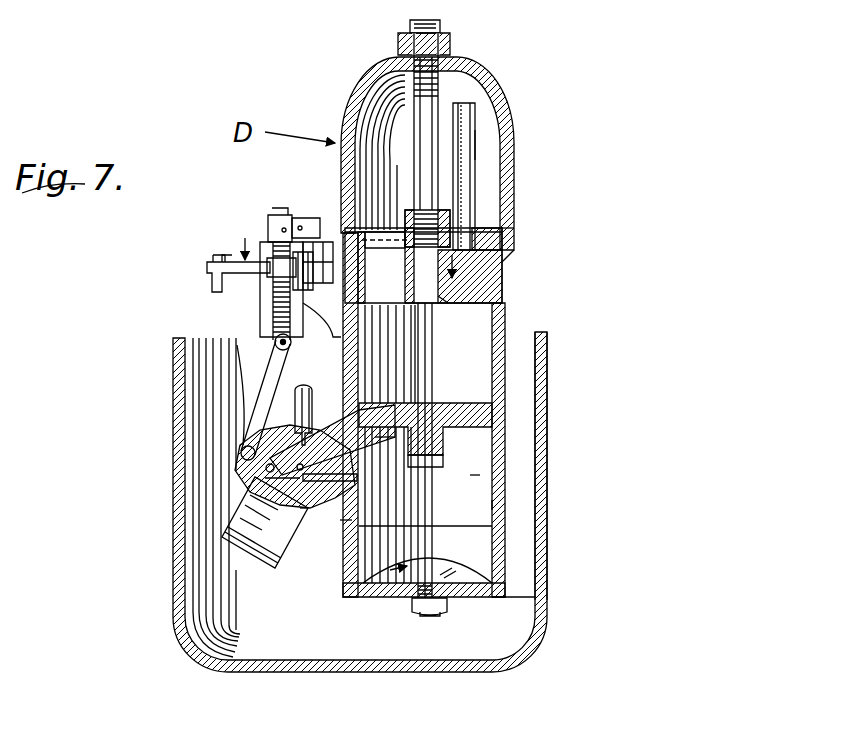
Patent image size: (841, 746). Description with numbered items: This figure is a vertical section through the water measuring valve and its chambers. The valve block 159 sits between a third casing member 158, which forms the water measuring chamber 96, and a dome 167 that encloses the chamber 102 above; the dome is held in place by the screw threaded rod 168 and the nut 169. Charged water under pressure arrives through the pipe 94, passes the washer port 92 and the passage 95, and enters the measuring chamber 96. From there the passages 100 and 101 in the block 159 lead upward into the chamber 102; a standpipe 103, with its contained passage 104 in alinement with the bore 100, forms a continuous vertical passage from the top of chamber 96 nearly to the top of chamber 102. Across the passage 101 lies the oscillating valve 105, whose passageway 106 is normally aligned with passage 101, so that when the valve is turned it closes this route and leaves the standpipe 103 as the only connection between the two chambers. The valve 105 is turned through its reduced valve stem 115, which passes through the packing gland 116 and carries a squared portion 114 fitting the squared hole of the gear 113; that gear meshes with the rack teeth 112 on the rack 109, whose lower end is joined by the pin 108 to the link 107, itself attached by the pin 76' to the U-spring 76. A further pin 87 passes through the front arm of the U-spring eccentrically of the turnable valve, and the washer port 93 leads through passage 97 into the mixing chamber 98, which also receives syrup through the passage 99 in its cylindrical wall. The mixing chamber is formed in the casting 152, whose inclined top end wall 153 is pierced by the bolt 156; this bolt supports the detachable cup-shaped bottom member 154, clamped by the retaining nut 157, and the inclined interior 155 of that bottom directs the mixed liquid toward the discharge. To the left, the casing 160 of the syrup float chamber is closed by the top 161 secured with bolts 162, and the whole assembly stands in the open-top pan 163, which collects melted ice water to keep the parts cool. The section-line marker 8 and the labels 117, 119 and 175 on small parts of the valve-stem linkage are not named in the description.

The section line 8- 8 is at (340, 256).
The U-spring 76 is at (265, 539).
The pin 76' is at (231, 450).
The pin 87 is at (280, 478).
The port 92 is at (262, 470).
The port 93 is at (258, 493).
The pipe 94 is at (314, 370).
The passage 95 is at (368, 437).
The water measuring chamber 96 is at (473, 353).
The passage 97 is at (303, 512).
The mixing chamber 98 is at (482, 470).
The passage 99 is at (345, 524).
The passage 100 is at (467, 272).
The passage 101 is at (388, 230).
The chamber 102 is at (488, 170).
The standpipe 103 is at (476, 134).
The passage 104 is at (467, 104).
The oscillating valve 105 is at (437, 300).
The passageway 106 is at (423, 305).
The link 107 is at (253, 426).
The pin 108 is at (276, 345).
The rack 109 is at (280, 210).
The rack teeth 112 is at (275, 295).
The gear 113 is at (273, 275).
The squared portion 114 is at (268, 270).
The valve stem 115 is at (405, 282).
The packing gland 116 is at (298, 285).
The block 117 is at (268, 222).
The block 119 is at (306, 218).
The casting 152 is at (505, 505).
The inclined top end wall 153 is at (503, 428).
The bottom closure member 154 is at (500, 604).
The interior 155 is at (403, 582).
The bolt 156 is at (435, 492).
The retaining nut 157 is at (440, 605).
The third member 158 is at (502, 312).
The valve block 159 is at (515, 246).
The casing 160 is at (243, 368).
The top 161 is at (223, 262).
The bolts 162 is at (212, 262).
The pan 163 is at (173, 537).
The dome 167 is at (348, 100).
The screw threaded rod 168 is at (412, 22).
The nut 169 is at (452, 48).
The cylinder 175 is at (320, 242).